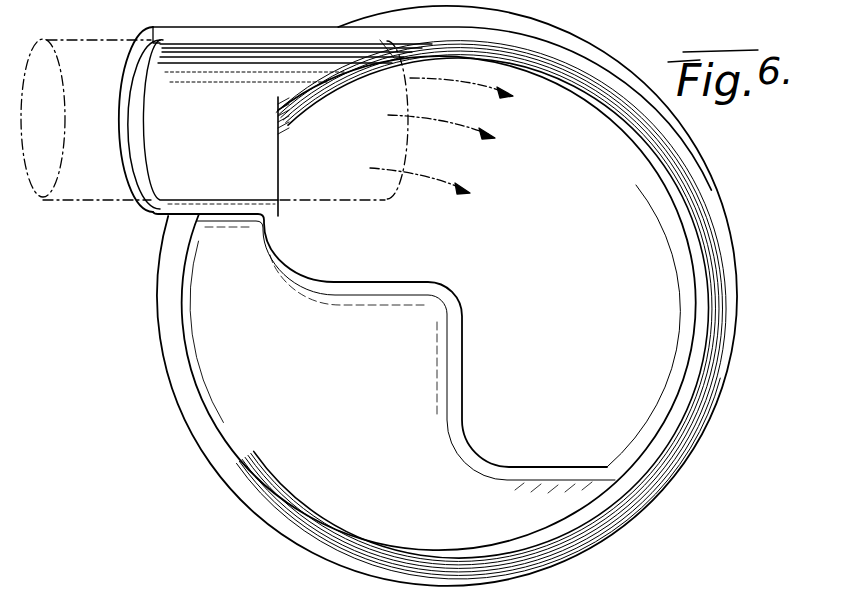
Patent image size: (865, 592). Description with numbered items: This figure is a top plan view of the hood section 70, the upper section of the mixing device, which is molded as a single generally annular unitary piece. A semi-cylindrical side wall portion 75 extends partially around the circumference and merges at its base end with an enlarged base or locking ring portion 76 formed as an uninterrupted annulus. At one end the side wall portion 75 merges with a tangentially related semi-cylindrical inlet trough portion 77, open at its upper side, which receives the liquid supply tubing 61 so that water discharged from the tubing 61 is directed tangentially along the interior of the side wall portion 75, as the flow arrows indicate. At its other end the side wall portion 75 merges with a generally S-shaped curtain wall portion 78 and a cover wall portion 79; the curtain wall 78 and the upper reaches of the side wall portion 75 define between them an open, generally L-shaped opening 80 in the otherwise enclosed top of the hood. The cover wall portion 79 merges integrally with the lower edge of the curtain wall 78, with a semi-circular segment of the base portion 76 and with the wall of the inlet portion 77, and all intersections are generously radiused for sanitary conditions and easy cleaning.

The liquid supply tubing 61 is at (107, 204).
The hood section 70 is at (747, 290).
The semi-cylindrical side wall portion 75 is at (700, 237).
The base or locking ring portion 76 is at (713, 365).
The inlet trough portion 77 is at (177, 32).
The S-shaped curtain wall portion 78 is at (460, 353).
The cover wall portion 79 is at (385, 437).
The L-shaped opening 80 is at (600, 288).